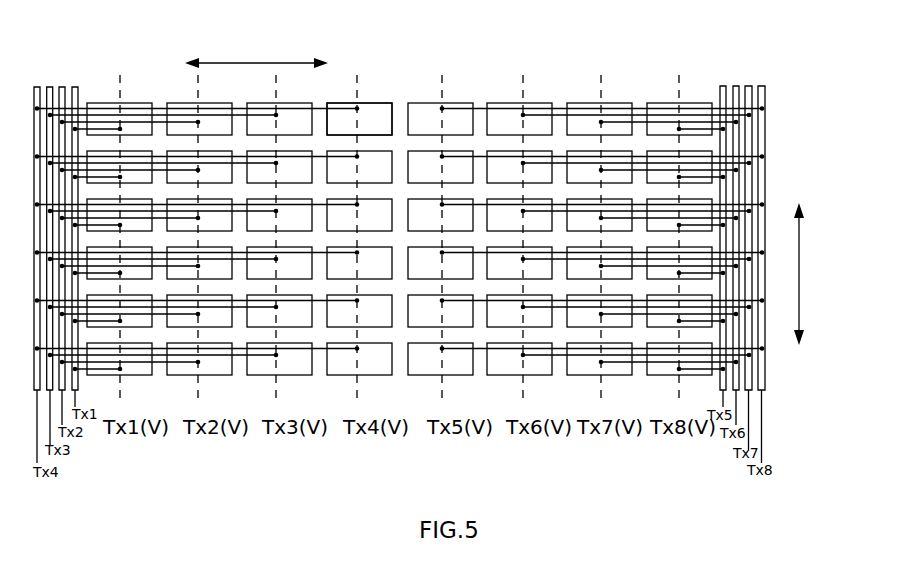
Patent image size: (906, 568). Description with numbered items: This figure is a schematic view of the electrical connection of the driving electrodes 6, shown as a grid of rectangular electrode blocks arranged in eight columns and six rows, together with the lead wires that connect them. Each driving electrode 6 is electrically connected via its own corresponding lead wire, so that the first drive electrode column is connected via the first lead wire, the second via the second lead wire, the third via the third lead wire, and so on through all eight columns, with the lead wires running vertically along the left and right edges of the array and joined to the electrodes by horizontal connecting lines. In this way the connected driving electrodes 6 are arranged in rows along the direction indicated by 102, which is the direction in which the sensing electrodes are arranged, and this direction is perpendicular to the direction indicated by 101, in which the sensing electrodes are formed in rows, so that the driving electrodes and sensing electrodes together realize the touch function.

The direction indicated by 102 is at (256, 46).
The driving electrode 6 is at (377, 108).
The direction indicated by 101 is at (832, 274).